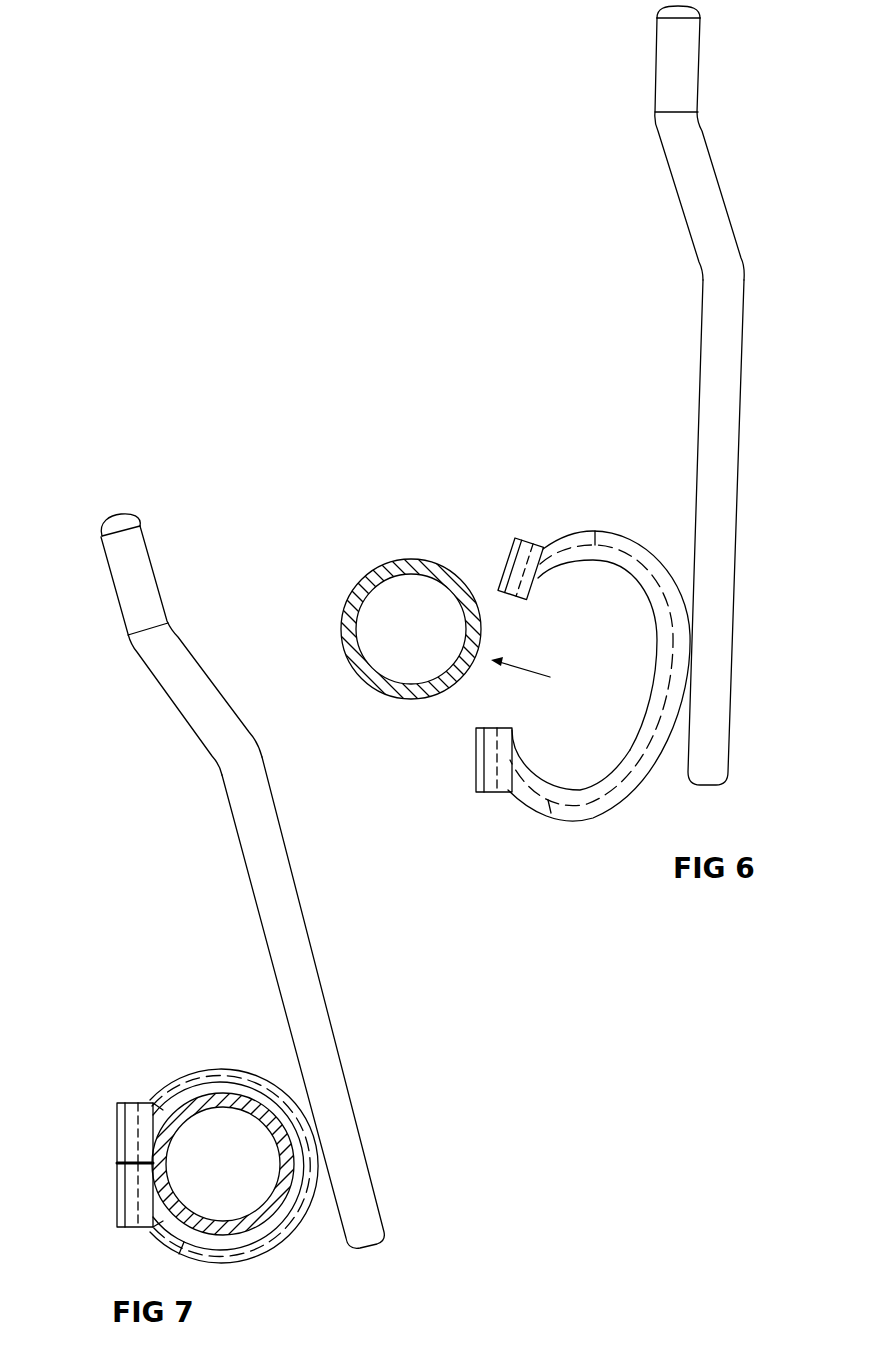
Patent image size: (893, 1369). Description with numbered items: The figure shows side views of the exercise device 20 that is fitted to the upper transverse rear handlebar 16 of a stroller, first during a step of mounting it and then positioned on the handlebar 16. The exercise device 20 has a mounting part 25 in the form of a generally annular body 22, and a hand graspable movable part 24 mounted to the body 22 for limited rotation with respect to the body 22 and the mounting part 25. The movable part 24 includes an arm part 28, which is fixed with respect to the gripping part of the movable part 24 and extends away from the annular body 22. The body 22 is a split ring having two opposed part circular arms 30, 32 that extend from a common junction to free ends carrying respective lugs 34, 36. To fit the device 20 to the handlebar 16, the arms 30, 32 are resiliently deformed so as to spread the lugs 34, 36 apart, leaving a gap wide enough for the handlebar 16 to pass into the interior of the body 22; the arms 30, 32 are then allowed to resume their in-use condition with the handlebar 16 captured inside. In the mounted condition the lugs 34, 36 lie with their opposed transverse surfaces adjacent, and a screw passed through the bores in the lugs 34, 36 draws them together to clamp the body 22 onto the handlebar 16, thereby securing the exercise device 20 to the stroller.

In FIG. 6, the handlebar 16 is at (409, 558).
In FIG. 7, the handlebar 16 is at (283, 1201).
In FIG. 6, the exercise device 20 is at (555, 681).
In FIG. 6, the annular body 22 is at (599, 657).
In FIG. 7, the annular body 22 is at (227, 1066).
In FIG. 6, the movable part 24 is at (724, 395).
In FIG. 7, the movable part 24 is at (276, 881).
In FIG. 6, the mounting part 25 is at (555, 628).
In FIG. 7, the mounting part 25 is at (178, 1125).
In FIG. 6, the arm part 28 is at (717, 693).
In FIG. 7, the arm part 28 is at (265, 847).
In FIG. 6, the part circular arm 30 is at (611, 557).
In FIG. 6, the part circular arm 32 is at (567, 788).
In FIG. 6, the lug 34 is at (534, 580).
In FIG. 7, the lug 34 is at (117, 1128).
In FIG. 6, the lug 36 is at (476, 760).
In FIG. 7, the lug 36 is at (117, 1200).